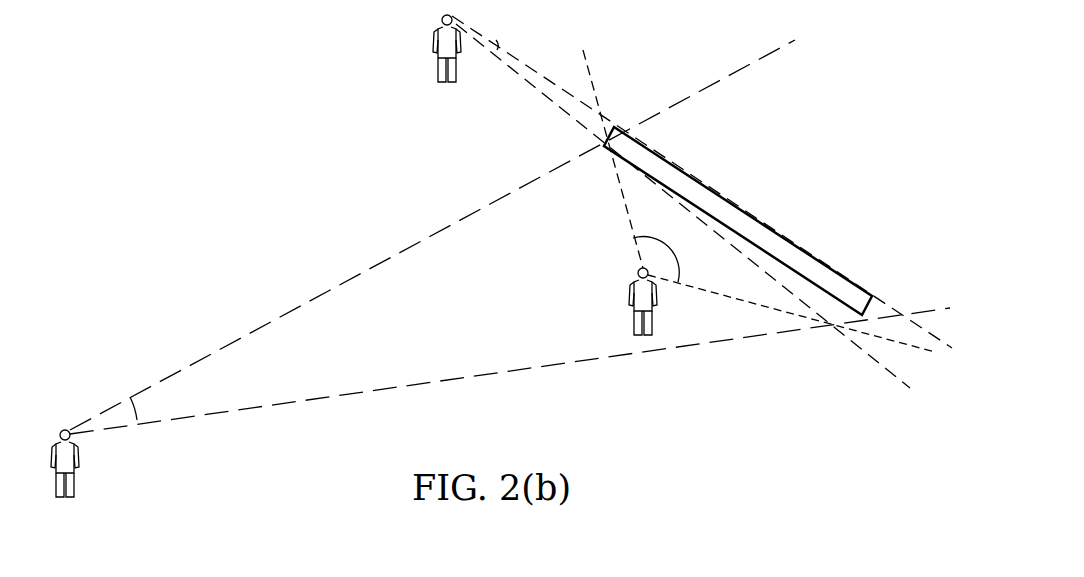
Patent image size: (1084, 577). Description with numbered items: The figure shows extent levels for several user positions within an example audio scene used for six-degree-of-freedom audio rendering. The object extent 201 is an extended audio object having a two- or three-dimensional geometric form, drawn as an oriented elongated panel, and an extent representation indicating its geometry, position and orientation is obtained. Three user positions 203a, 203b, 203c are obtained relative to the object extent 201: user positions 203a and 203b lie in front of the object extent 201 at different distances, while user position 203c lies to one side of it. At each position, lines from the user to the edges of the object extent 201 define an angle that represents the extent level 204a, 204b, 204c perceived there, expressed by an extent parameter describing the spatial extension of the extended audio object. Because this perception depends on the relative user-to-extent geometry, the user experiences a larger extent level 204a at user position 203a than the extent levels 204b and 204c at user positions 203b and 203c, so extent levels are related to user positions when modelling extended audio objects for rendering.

The object extent 201 is at (750, 218).
The user position 203a is at (633, 320).
The user position 203b is at (74, 482).
The user position 203c is at (435, 38).
The extent level 204a is at (641, 246).
The extent level 204b is at (105, 417).
The extent level 204c is at (524, 31).